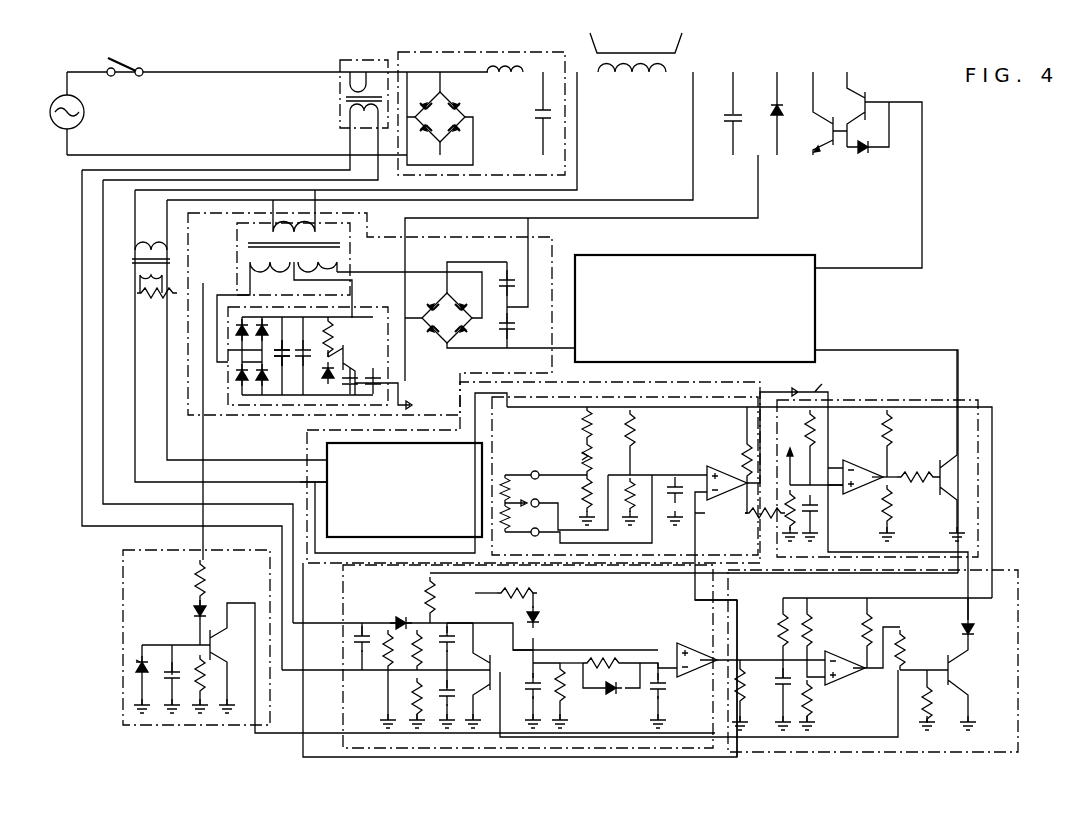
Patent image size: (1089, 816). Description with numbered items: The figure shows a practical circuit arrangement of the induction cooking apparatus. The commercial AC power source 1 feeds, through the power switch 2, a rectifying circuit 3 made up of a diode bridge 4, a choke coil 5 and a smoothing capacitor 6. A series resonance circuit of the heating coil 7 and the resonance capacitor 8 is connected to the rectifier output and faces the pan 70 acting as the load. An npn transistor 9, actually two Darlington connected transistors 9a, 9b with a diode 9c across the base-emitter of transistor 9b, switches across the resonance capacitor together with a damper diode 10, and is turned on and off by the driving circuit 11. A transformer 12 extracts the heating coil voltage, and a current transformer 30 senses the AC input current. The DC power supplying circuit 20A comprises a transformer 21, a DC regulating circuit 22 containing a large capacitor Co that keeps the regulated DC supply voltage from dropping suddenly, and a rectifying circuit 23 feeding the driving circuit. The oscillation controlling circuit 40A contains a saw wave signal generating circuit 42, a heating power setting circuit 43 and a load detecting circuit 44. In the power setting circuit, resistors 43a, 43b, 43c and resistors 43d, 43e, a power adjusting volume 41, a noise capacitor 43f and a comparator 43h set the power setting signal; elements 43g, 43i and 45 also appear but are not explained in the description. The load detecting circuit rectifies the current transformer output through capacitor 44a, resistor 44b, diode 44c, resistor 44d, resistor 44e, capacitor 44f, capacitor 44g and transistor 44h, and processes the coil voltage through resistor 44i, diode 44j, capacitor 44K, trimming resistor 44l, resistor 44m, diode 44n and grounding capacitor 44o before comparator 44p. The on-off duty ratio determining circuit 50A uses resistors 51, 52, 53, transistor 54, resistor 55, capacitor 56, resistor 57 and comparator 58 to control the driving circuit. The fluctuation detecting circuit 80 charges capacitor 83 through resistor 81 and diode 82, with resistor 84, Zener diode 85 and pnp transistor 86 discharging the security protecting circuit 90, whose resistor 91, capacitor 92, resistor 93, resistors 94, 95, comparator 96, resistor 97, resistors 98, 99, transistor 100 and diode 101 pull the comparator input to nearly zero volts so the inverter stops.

The commercial AC power source 1 is at (86, 110).
The power switch 2 is at (136, 59).
The rectifying circuit 3 is at (485, 52).
The diode bridge 4 is at (456, 102).
The choke coil 5 is at (504, 90).
The smoothing capacitor 6 is at (531, 124).
The heating coil 7 is at (630, 85).
The resonance capacitor 8 is at (728, 110).
The npn transistor 9 is at (866, 159).
The transistor 9a is at (820, 168).
The transistor 9b is at (870, 88).
The diode 9c is at (870, 160).
The damper diode 10 is at (772, 108).
The driving circuit 11 is at (818, 302).
The transformer 12 is at (122, 250).
The DC power supplying circuit 20A is at (381, 314).
The transformer 21 is at (224, 250).
The DC regulating circuit 22 is at (230, 408).
The rectifying circuit 23 is at (346, 360).
The capacitor Co is at (282, 372).
The current transformer 30 is at (346, 54).
The oscillation controlling circuit 40A is at (306, 450).
The power adjusting volume 41 is at (504, 474).
The saw wave signal generating circuit 42 is at (300, 486).
The heating power setting circuit 43 is at (738, 558).
The resistor 43a is at (564, 424).
The resistor 43b is at (576, 458).
The resistor 43c is at (581, 494).
The resistor 43d is at (633, 448).
The resistor 43e is at (634, 515).
The capacitor 43f is at (677, 515).
The feedback resistor 43g is at (758, 520).
The comparator 43h is at (727, 464).
The output line 43i is at (760, 392).
The load detecting circuit 44 is at (620, 658).
The capacitor 44a is at (352, 638).
The resistor 44b is at (384, 670).
The diode 44c is at (394, 620).
The resistor 44d is at (416, 624).
The resistor 44e is at (408, 706).
The capacitor 44f is at (454, 636).
The capacitor 44g is at (440, 716).
The transistor 44h is at (486, 656).
The resistor 44i is at (528, 592).
The diode 44j is at (540, 626).
The capacitor 44K is at (496, 714).
The trimming resistor 44l is at (570, 704).
The resistor 44m is at (602, 662).
The diode 44n is at (600, 688).
The grounding capacitor 44o is at (664, 692).
The comparator 44p is at (686, 646).
The resistor 45 is at (434, 602).
The on-off duty ratio determining circuit 50A is at (902, 485).
The resistor 51 is at (894, 444).
The resistor 52 is at (894, 508).
The resistor 53 is at (904, 474).
The npn transistor 54 is at (960, 476).
The resistor 55 is at (808, 440).
The capacitor 56 is at (804, 503).
The resistor 57 is at (810, 520).
The comparator 58 is at (850, 460).
The pan 70 is at (690, 42).
The circuit for detecting a fluctuation in the AC power source 80 is at (391, 653).
The resistor 81 is at (216, 580).
The diode 82 is at (192, 606).
The capacitor 83 is at (172, 644).
The resistor 84 is at (224, 702).
The Zener diode 85 is at (134, 660).
The pnp transistor 86 is at (230, 662).
The security protecting circuit 90 is at (901, 663).
The resistor 91 is at (780, 620).
The capacitor 92 is at (772, 650).
The resistor 93 is at (764, 662).
The resistor 94 is at (812, 630).
The resistor 95 is at (814, 700).
The comparator 96 is at (848, 680).
The resistor 97 is at (876, 630).
The resistor 98 is at (908, 650).
The resistor 99 is at (932, 720).
The npn transistor 100 is at (961, 670).
The diode 101 is at (992, 628).